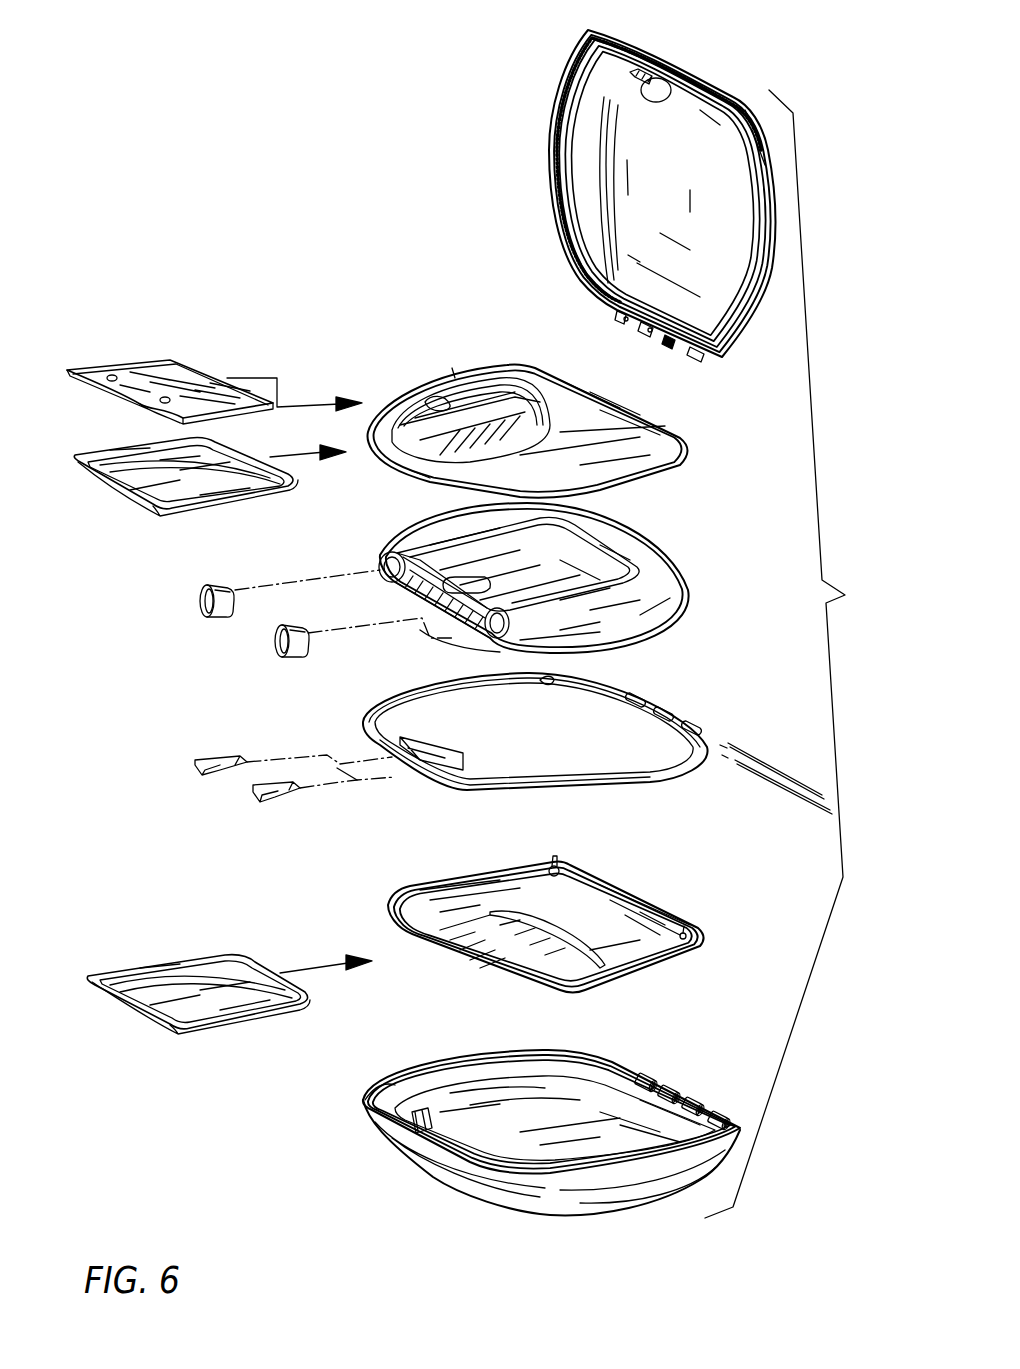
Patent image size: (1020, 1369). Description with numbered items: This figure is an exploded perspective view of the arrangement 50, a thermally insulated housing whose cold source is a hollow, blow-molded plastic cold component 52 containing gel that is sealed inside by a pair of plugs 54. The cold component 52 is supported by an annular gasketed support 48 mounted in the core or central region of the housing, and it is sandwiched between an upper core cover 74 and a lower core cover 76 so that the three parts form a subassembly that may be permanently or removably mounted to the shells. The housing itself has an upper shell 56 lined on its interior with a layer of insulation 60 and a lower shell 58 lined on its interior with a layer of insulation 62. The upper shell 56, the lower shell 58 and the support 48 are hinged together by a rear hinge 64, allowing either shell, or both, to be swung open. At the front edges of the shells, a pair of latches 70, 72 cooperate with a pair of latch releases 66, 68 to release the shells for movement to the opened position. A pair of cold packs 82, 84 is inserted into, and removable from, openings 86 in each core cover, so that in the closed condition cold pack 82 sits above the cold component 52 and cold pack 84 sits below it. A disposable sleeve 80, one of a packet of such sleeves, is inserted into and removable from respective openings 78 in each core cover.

The annular gasketed support 48 is at (597, 745).
The arrangement 50 is at (793, 654).
The cold component 52 is at (620, 548).
The plugs 54 is at (280, 641).
The upper shell 56 is at (621, 196).
The lower shell 58 is at (493, 1135).
The layer of insulation 60 is at (607, 260).
The layer of insulation 62 is at (563, 1120).
The rear hinge 64 is at (665, 708).
The latch release 66 is at (258, 797).
The latch release 68 is at (208, 772).
The latch 70 is at (668, 80).
The latch 72 is at (395, 1118).
The upper core cover 74 is at (554, 405).
The lower core cover 76 is at (663, 975).
The openings 78 is at (455, 375).
The disposable sleeve 80 is at (163, 362).
The cold pack 82 is at (132, 457).
The cold pack 84 is at (152, 978).
The openings 86 is at (400, 410).